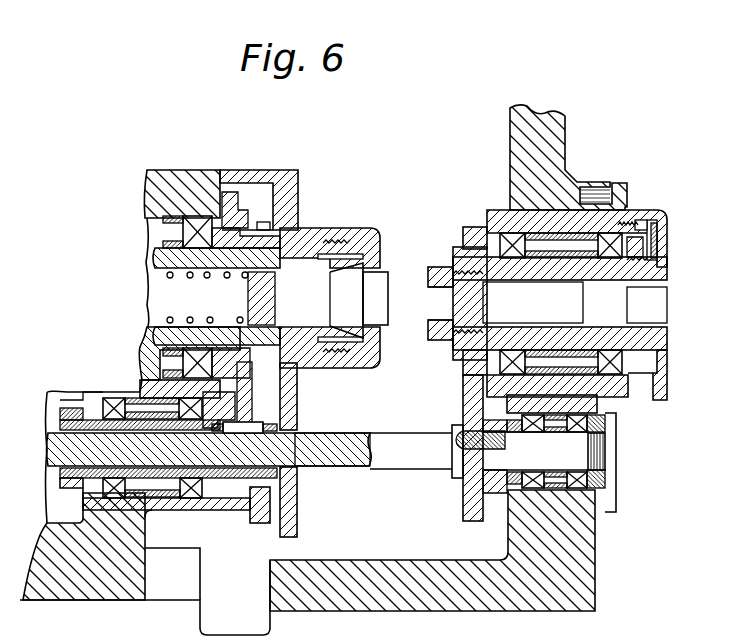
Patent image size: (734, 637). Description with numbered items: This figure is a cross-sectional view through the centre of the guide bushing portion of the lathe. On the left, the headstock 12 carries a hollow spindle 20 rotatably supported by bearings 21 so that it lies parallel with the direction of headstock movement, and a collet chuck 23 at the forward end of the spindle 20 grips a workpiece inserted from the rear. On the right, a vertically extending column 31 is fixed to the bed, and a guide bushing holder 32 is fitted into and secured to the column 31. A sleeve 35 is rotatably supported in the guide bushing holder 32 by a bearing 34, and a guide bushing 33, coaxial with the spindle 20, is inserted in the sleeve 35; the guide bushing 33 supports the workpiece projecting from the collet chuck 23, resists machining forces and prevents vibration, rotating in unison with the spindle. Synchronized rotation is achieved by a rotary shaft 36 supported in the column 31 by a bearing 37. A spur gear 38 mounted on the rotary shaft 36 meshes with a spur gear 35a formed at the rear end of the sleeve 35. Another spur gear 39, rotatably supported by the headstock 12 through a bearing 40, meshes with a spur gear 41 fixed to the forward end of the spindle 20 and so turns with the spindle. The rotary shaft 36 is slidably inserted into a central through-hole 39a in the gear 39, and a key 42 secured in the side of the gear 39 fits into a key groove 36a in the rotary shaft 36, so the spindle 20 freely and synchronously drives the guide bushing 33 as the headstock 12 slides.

The headstock 12 is at (172, 172).
The hollow spindle 20 is at (311, 235).
The bearings 21 is at (197, 222).
The collet chuck 23 is at (357, 310).
The column 31 is at (590, 560).
The guide bushing holder 32 is at (620, 402).
The guide bushing 33 is at (652, 286).
The bearing 34 is at (650, 233).
The sleeve 35 is at (648, 272).
The spur gear 35a is at (465, 368).
The rotary shaft 36 is at (405, 470).
The key groove 36a is at (318, 433).
The bearing 37 is at (583, 492).
The spur gear 38 is at (463, 400).
The spur gear 39 is at (257, 523).
The central through-hole 39a is at (243, 463).
The bearing 40 is at (197, 498).
The spur gear 41 is at (263, 222).
The key 42 is at (260, 433).